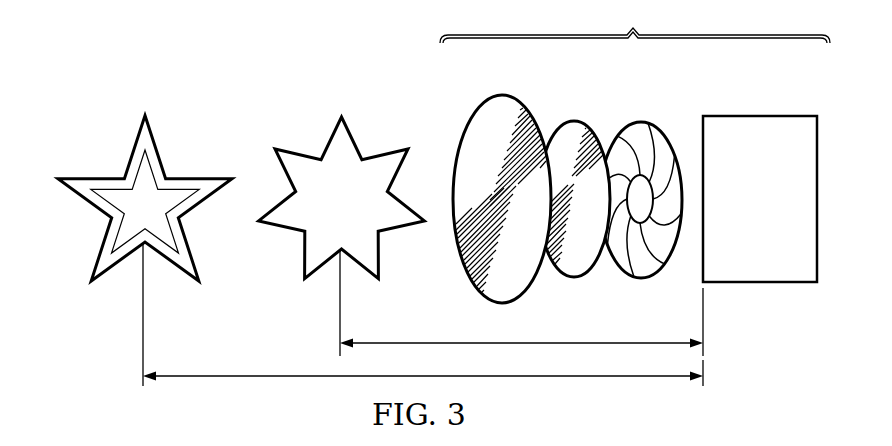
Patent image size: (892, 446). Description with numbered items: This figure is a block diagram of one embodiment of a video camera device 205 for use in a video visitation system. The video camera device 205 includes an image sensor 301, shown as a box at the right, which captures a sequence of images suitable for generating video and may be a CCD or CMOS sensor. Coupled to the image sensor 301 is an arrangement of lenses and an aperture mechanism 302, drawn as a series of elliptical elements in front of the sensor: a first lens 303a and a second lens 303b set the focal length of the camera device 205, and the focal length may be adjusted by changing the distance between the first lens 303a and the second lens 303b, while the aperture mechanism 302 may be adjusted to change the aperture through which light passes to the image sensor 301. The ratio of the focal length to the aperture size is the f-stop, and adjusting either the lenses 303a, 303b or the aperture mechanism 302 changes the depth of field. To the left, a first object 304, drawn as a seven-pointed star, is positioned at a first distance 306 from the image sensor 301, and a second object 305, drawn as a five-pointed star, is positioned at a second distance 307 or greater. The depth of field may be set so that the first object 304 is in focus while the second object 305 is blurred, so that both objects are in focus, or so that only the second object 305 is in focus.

The video camera device 205 is at (635, 22).
The image sensor 301 is at (740, 239).
The aperture mechanism 302 is at (653, 127).
The first lens 303a is at (578, 122).
The second lens 303b is at (505, 95).
The first object 304 is at (305, 158).
The second object 305 is at (100, 177).
The first distance 306 is at (562, 342).
The second distance 307 is at (268, 375).